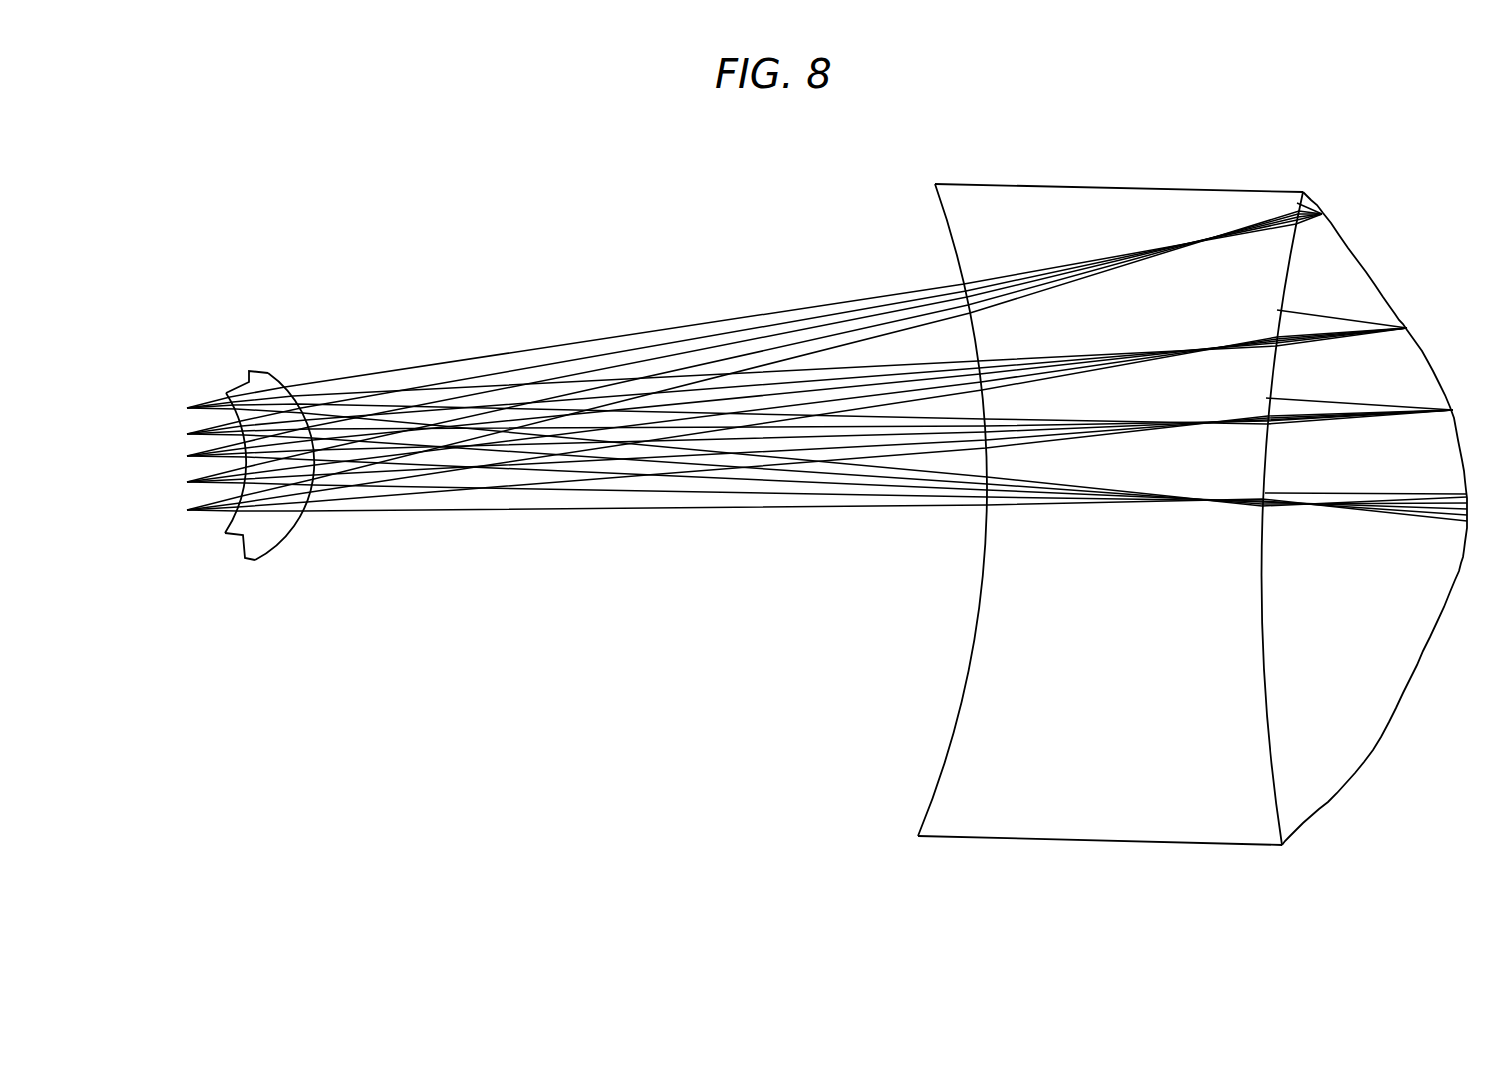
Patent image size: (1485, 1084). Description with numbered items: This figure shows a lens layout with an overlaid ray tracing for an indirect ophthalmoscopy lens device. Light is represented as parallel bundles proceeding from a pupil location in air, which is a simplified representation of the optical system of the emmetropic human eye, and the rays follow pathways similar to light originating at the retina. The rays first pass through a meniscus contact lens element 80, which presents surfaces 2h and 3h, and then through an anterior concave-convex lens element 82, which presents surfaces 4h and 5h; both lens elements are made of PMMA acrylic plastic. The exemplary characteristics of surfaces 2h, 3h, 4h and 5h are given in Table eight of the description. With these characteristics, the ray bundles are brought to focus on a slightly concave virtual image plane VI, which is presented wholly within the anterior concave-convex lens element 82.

The surface 2h is at (215, 522).
The surface 3h is at (293, 538).
The meniscus contact lens element 80 is at (265, 541).
The surface 4h is at (962, 688).
The anterior concave-convex lens element 82 is at (1108, 200).
The virtual image plane VI is at (1268, 678).
The surface 5h is at (1373, 752).